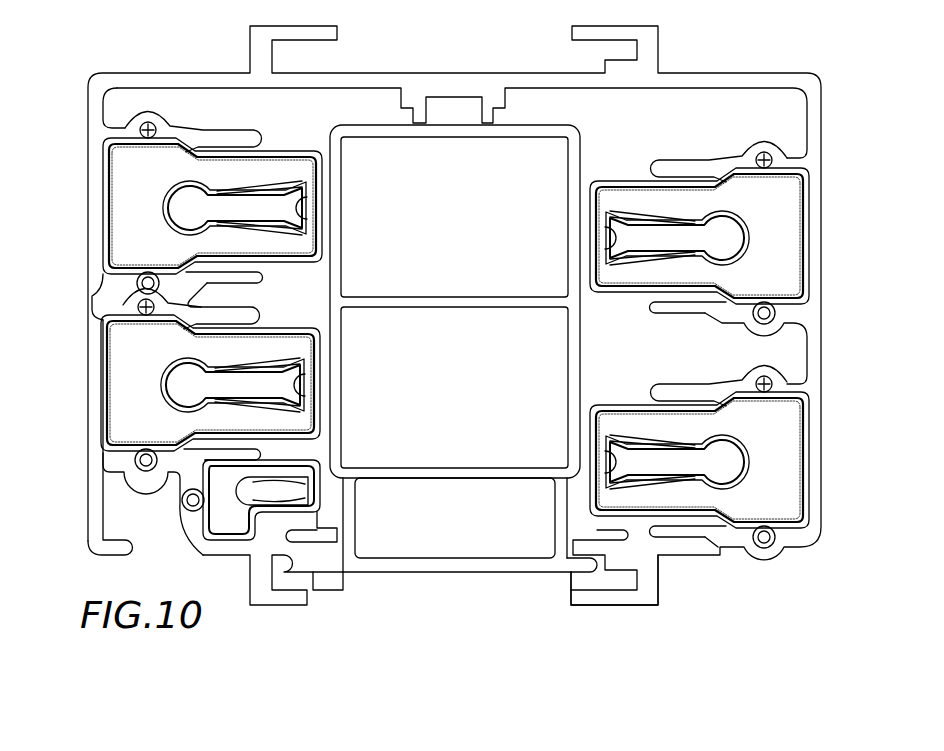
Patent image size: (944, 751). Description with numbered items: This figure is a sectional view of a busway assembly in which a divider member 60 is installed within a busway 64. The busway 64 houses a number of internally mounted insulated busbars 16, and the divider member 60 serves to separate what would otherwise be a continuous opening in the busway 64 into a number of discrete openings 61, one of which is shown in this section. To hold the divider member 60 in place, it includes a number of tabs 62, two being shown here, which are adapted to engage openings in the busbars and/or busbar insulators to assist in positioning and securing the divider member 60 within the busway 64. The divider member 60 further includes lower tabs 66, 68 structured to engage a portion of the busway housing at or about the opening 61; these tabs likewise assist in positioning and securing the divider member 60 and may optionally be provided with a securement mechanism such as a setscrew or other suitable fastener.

The insulated busbar 16 is at (122, 190).
The divider member 60 is at (530, 125).
The discrete opening 61 is at (457, 582).
The tab 62 is at (292, 205).
The busway 64 is at (808, 134).
The lower tab 66 is at (328, 576).
The lower tab 68 is at (572, 574).